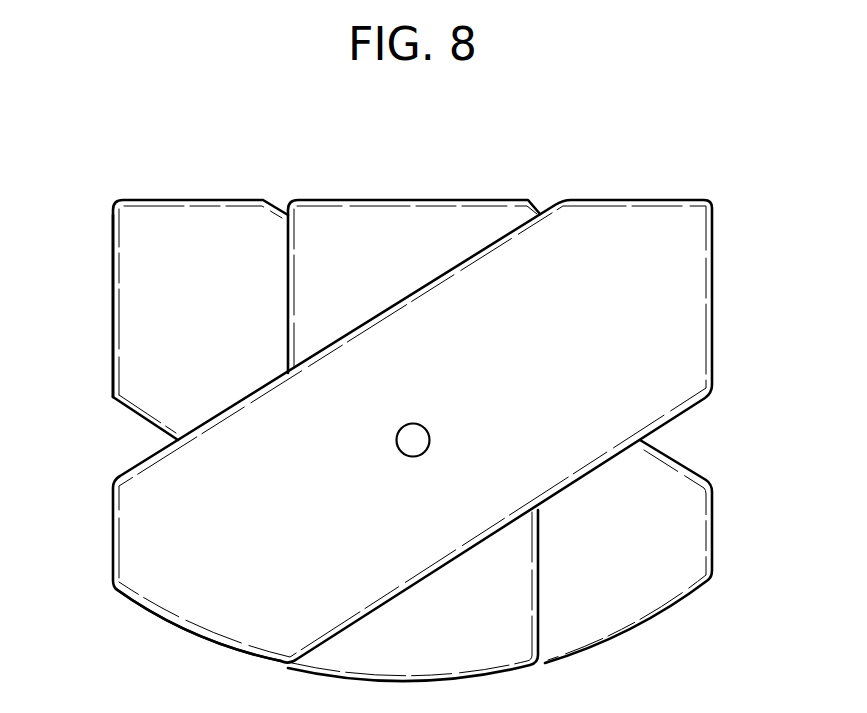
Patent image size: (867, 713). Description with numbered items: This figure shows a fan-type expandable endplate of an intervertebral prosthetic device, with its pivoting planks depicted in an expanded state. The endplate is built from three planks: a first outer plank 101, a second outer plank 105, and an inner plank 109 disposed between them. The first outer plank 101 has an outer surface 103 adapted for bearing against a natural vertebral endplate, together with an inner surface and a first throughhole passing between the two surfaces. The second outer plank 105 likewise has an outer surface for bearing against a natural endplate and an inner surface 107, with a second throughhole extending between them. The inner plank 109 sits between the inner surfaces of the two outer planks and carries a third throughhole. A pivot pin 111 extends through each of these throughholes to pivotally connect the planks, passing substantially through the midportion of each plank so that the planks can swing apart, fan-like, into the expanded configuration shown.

The first outer plank 101 is at (738, 312).
The outer surface 103 is at (173, 607).
The second outer plank 105 is at (106, 188).
The inner surface 107 is at (130, 342).
The inner plank 109 is at (414, 176).
The pivot pin 111 is at (412, 445).